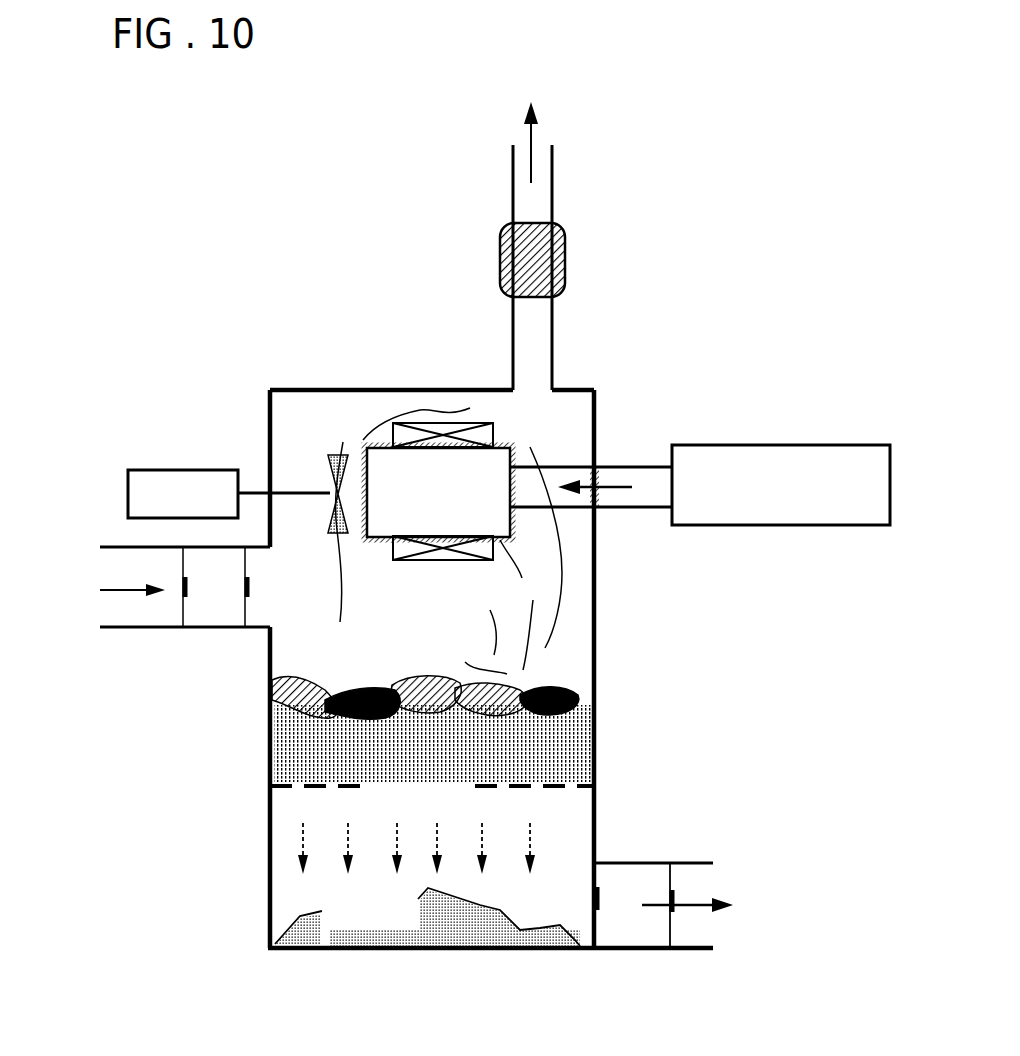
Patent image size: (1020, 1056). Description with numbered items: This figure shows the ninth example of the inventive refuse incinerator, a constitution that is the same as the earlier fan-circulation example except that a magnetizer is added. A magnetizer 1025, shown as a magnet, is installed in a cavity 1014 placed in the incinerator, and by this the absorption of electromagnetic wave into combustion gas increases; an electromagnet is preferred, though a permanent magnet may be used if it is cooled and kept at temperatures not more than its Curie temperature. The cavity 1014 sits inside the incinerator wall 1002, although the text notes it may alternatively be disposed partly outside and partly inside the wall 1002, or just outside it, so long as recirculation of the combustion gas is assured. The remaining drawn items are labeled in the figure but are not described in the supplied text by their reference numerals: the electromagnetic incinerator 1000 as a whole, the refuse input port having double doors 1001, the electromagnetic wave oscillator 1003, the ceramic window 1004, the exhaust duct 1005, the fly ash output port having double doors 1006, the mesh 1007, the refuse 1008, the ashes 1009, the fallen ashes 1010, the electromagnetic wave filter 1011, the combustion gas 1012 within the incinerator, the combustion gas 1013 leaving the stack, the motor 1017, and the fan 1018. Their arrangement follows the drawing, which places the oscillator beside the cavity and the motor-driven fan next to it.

The electromagnetic incinerator 1000 is at (152, 170).
The refuse input port having double doors 1001 is at (146, 630).
The incinerator wall 1002 is at (595, 588).
The electromagnetic wave oscillator 1003 is at (703, 445).
The ceramic window 1004 is at (497, 426).
The exhaust duct 1005 is at (553, 338).
The fly ash output port having double doors 1006 is at (595, 936).
The mesh 1007 is at (595, 784).
The refuse 1008 is at (420, 660).
The ashes 1009 is at (433, 743).
The ashes (fly ash) 1010 is at (427, 884).
The electromagnetic wave filter 1011 is at (566, 235).
The combustion gas 1012 is at (356, 600).
The combustion gas 1013 is at (527, 123).
The cavity 1014 is at (438, 492).
The motor 1017 is at (165, 470).
The fan 1018 is at (330, 524).
The magnetizer 1025 is at (434, 405).